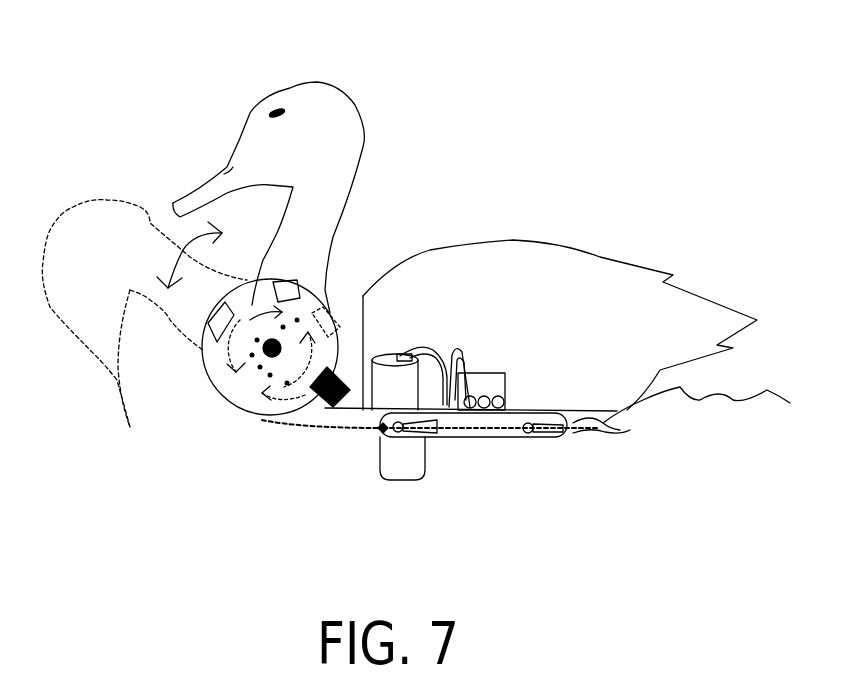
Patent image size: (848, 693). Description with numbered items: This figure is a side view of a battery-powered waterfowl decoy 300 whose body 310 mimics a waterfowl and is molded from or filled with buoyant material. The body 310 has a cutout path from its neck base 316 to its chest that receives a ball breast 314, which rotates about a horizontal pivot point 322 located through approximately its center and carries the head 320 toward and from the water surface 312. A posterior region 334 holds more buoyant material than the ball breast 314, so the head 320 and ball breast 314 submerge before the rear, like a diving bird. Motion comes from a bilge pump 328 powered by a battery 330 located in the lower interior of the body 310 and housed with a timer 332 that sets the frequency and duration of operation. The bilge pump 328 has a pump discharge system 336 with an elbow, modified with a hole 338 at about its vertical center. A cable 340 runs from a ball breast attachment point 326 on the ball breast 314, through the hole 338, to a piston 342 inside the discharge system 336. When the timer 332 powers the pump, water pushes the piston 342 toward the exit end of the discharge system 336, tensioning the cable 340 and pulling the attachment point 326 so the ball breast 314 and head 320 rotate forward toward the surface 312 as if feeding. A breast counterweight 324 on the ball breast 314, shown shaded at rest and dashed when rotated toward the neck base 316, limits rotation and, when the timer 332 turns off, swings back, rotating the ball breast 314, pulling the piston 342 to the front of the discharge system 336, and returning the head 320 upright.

The waterfowl decoy 300 is at (485, 149).
The body 310 is at (563, 243).
The surface 312 is at (593, 427).
The ball breast 314 is at (245, 398).
The neck base 316 is at (330, 307).
The head 320 is at (322, 120).
The horizontal pivot point 322 is at (268, 338).
The breast counterweight 324 is at (267, 417).
The ball breast attachment point 326 is at (220, 398).
The bilge pump 328 is at (390, 395).
The battery 330 is at (493, 370).
The timer 332 is at (463, 353).
The posterior region 334 is at (637, 307).
The pump discharge system 336 is at (450, 437).
The hole 338 is at (372, 405).
The cable 340 is at (305, 428).
The piston 342 is at (547, 437).